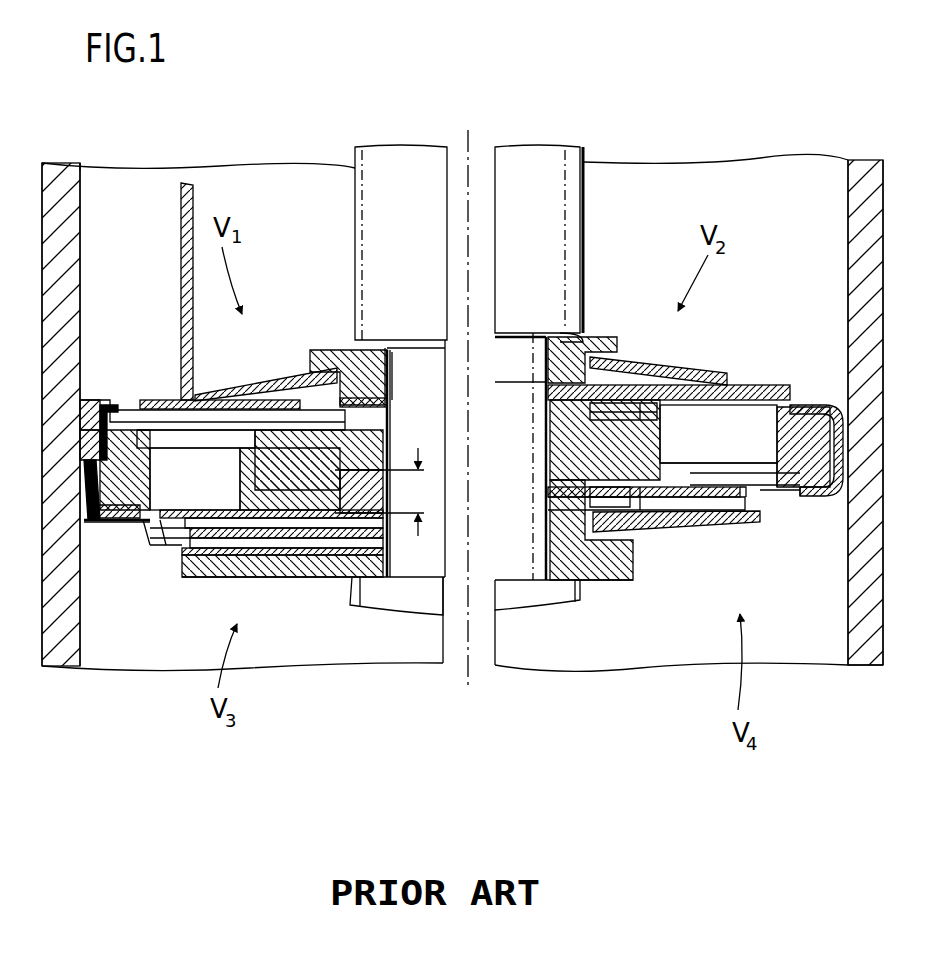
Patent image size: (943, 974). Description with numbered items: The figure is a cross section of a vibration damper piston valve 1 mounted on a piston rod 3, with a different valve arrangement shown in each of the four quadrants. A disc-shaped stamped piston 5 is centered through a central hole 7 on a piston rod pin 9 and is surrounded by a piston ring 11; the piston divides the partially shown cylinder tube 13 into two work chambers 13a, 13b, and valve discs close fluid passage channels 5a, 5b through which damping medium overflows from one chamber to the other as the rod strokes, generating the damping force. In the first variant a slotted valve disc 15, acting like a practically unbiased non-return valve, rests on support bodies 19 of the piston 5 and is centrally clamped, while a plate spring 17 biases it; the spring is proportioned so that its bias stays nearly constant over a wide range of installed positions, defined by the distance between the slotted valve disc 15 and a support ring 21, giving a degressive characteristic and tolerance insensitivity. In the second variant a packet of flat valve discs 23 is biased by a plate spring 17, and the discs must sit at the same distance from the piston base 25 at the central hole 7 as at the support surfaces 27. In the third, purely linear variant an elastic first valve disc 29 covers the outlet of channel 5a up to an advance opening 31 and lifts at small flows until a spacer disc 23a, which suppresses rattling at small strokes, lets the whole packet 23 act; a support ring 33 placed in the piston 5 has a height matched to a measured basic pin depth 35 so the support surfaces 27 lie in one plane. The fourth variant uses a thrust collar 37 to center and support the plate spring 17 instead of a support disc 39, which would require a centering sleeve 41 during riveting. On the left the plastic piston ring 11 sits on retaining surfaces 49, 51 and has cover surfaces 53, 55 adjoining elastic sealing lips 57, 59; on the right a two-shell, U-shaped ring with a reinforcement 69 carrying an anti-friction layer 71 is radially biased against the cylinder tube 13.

The vibration damper piston valve 1 is at (128, 751).
The piston rod 3 is at (583, 153).
The piston 5 is at (795, 458).
The fluid passage channel 5a is at (185, 475).
The fluid passage channel 5b is at (750, 425).
The central hole 7 is at (545, 441).
The piston rod pin 9 is at (437, 558).
The piston ring 11 is at (105, 526).
The cylinder tube 13 is at (858, 200).
The work chamber 13a is at (703, 193).
The work chamber 13b is at (672, 642).
The slotted valve disc 15 is at (148, 394).
The plate spring 17 is at (271, 333).
The support bodies 19 is at (238, 408).
The support ring 21 is at (322, 348).
The flat valve discs 23 is at (272, 548).
The spacer disc 23a is at (181, 531).
The piston base 25 is at (313, 544).
The support surfaces 27 is at (284, 548).
The first valve disc 29 is at (163, 539).
The advance opening 31 is at (145, 535).
The support ring 33 is at (374, 488).
The basic pin depth 35 is at (385, 477).
The thrust collar 37 is at (603, 565).
The support disc 39 is at (382, 352).
The centering sleeve 41 is at (179, 272).
The retaining surface 49 is at (92, 446).
The retaining surface 51 is at (90, 478).
The cover surface 53 is at (100, 397).
The cover surface 55 is at (100, 517).
The sealing lip 57 is at (100, 411).
The sealing lip 59 is at (100, 504).
The reinforcement 69 is at (822, 404).
The anti-friction layer 71 is at (830, 500).